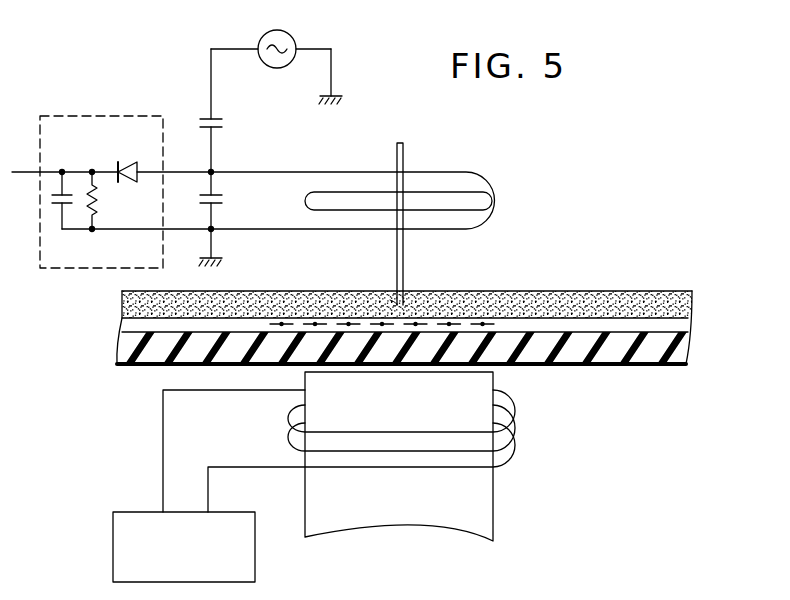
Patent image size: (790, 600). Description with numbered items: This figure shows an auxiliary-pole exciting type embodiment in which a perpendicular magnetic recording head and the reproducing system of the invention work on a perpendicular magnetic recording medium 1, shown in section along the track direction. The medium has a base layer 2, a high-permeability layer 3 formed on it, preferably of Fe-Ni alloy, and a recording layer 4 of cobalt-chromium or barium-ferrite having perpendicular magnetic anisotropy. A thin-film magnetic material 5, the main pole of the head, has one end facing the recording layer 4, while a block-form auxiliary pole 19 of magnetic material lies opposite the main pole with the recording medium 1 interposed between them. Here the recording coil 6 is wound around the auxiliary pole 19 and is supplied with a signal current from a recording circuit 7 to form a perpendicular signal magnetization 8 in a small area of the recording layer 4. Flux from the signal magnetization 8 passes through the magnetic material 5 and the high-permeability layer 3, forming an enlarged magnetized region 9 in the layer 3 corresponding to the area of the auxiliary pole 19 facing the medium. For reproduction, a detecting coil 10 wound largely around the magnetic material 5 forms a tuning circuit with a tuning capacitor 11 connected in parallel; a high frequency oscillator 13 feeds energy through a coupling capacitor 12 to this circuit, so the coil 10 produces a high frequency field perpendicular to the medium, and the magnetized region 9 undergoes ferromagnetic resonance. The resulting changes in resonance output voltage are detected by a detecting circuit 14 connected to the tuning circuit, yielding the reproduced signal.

The perpendicular magnetic recording medium 1 is at (406, 331).
The base layer 2 is at (632, 366).
The high-permeability layer 3 is at (624, 330).
The recording layer 4 is at (590, 302).
The thin-film magnetic material 5 is at (404, 271).
The recording coil 6 is at (516, 428).
The recording circuit 7 is at (113, 544).
The perpendicular signal magnetization 8 is at (397, 305).
The enlarged magnetized region 9 is at (318, 321).
The detecting coil 10 is at (496, 188).
The tuning capacitor 11 is at (226, 200).
The coupling capacitor 12 is at (224, 121).
The high frequency oscillator 13 is at (292, 38).
The detecting circuit 14 is at (98, 114).
The auxiliary pole 19 is at (494, 518).